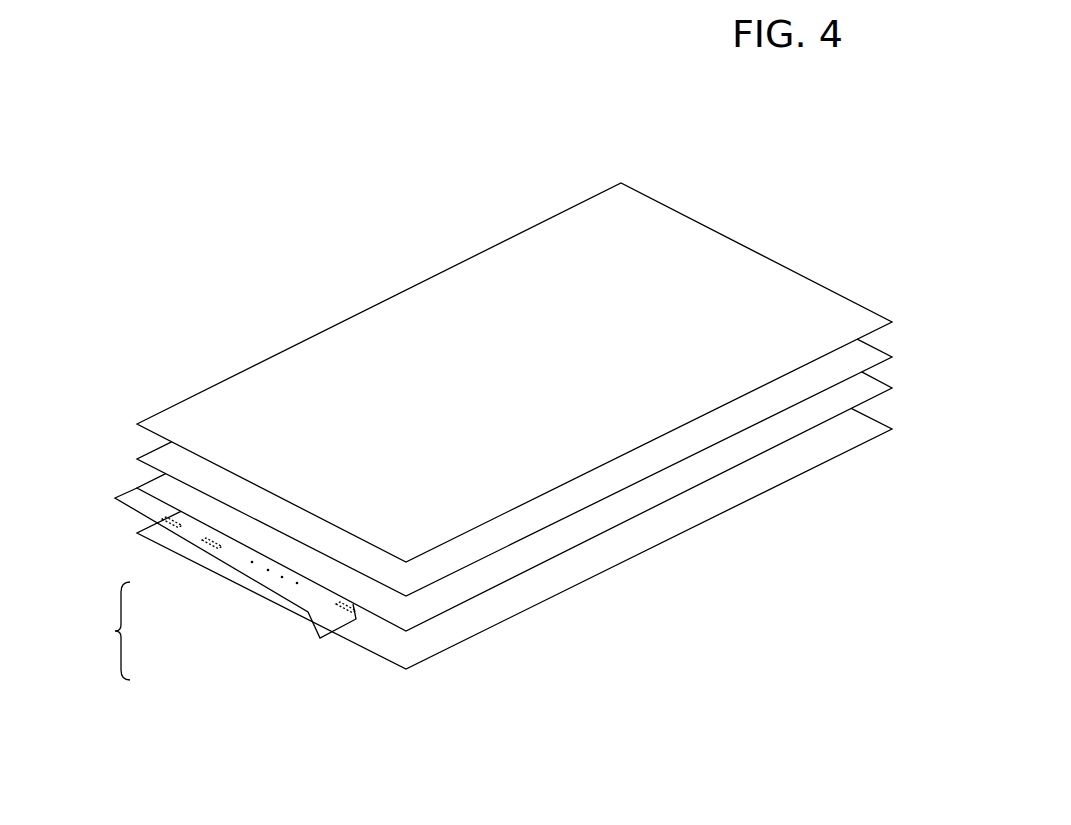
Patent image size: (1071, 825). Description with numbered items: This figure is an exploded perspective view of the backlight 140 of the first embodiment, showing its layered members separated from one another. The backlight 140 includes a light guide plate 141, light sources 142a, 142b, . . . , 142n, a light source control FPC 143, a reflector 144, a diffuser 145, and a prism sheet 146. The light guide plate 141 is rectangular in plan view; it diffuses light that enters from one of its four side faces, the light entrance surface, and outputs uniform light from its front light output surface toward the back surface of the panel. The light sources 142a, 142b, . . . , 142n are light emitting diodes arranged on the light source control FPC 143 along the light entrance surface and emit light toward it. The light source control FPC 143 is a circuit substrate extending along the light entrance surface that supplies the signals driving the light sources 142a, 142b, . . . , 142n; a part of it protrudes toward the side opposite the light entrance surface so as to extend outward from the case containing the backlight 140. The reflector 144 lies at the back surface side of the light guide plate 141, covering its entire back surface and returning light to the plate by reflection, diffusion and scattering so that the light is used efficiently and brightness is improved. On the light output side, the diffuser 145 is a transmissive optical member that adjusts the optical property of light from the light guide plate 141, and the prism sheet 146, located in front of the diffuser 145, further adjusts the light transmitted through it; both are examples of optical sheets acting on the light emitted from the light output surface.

The backlight 140 is at (584, 156).
The light guide plate 141 is at (537, 566).
The light source 142a is at (178, 528).
The light source 142b is at (215, 549).
The light source 142n is at (343, 612).
The light source control FPC 143 is at (380, 626).
The reflector 144 is at (480, 636).
The diffuser 145 is at (598, 502).
The prism sheet 146 is at (627, 454).